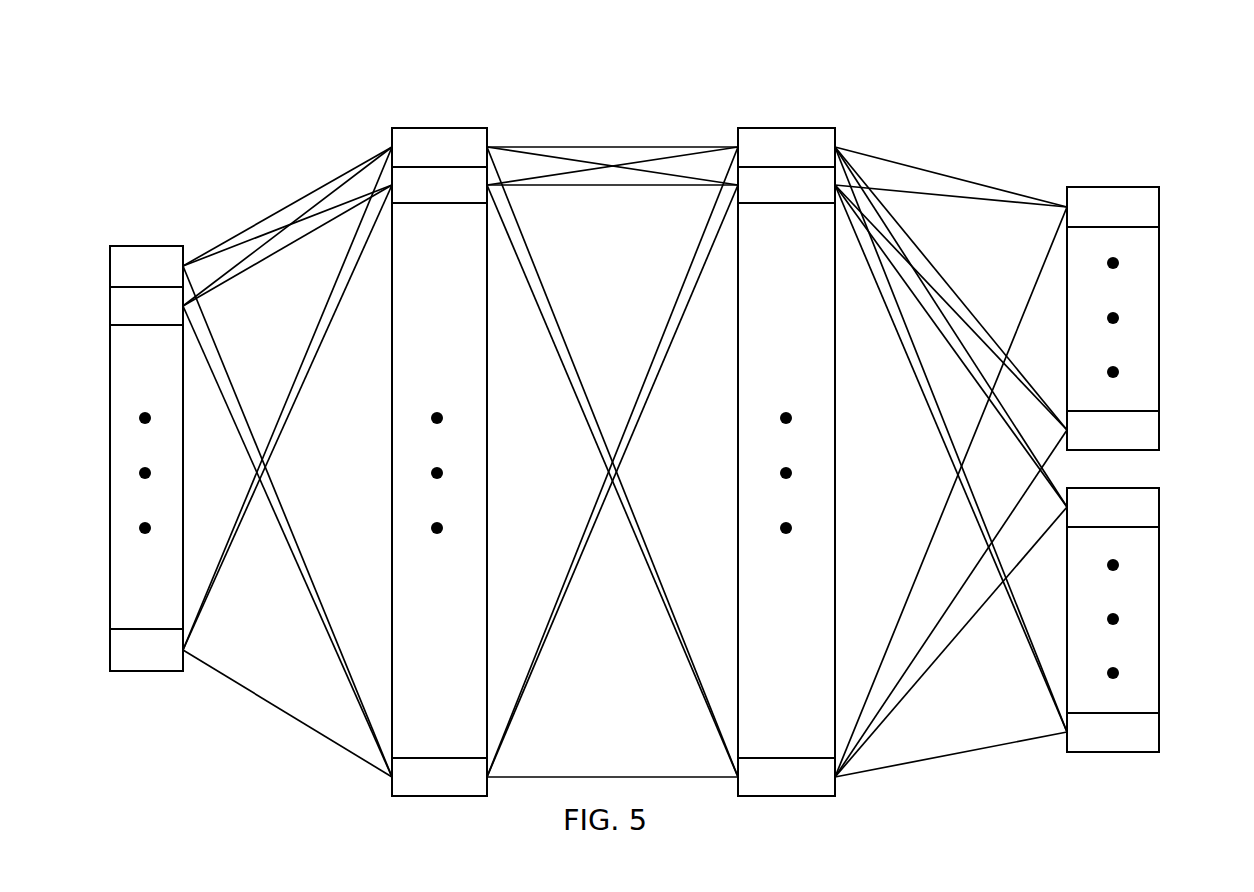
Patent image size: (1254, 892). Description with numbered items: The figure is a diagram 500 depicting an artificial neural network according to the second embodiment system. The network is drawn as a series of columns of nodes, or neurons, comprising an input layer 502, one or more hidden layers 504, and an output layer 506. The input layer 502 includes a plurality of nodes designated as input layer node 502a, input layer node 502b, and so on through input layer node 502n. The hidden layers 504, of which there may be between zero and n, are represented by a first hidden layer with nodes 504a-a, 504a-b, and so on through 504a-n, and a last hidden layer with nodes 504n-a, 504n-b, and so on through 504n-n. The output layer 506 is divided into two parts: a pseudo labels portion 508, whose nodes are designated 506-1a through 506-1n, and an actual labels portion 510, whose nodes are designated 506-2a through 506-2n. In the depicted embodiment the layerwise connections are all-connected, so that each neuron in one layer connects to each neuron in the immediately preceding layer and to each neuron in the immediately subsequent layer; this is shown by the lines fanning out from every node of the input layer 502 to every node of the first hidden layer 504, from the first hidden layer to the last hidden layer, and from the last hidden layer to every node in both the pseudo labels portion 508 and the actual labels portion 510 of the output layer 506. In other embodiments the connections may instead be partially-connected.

The diagram 500 is at (153, 68).
The input layer 502 is at (147, 224).
The input layer node 502a is at (123, 281).
The input layer node 502b is at (123, 320).
The input layer node 502n is at (123, 663).
The hidden layers 504 is at (740, 109).
The first hidden layer node 504a-a is at (404, 160).
The first hidden layer node 504a-b is at (404, 198).
The first hidden layer node 504a-n is at (404, 789).
The last hidden layer node 504n-a is at (752, 160).
The last hidden layer node 504n-b is at (752, 198).
The last hidden layer node 504n-n is at (752, 789).
The output layer 506 is at (1110, 166).
The pseudo labels portion node 506-1a is at (1148, 219).
The pseudo labels portion node 506-1n is at (1148, 442).
The actual labels portion node 506-2a is at (1148, 519).
The actual labels portion node 506-2n is at (1148, 744).
The pseudo labels portion 508 is at (1160, 320).
The actual labels portion 510 is at (1160, 622).